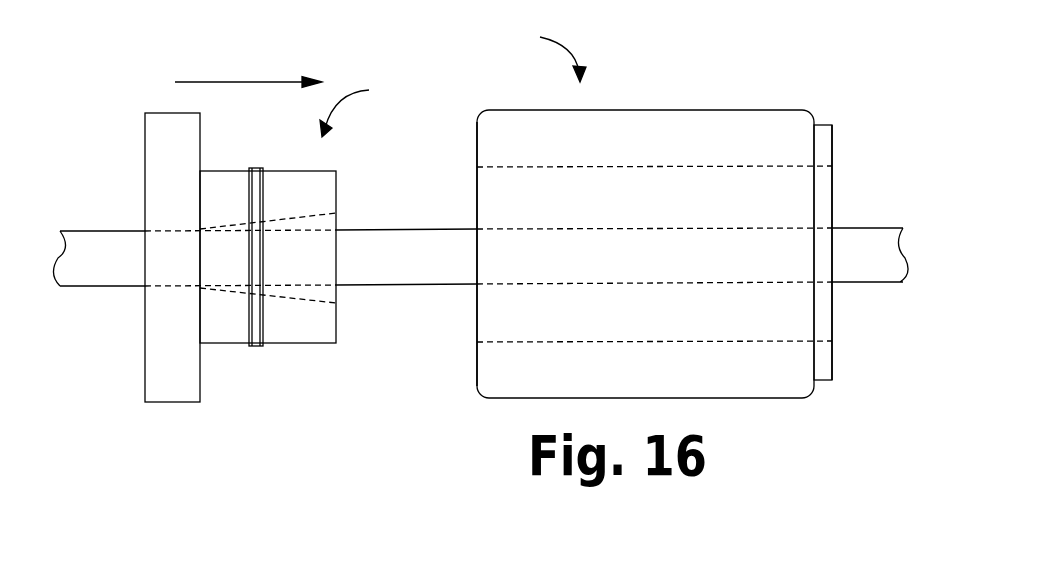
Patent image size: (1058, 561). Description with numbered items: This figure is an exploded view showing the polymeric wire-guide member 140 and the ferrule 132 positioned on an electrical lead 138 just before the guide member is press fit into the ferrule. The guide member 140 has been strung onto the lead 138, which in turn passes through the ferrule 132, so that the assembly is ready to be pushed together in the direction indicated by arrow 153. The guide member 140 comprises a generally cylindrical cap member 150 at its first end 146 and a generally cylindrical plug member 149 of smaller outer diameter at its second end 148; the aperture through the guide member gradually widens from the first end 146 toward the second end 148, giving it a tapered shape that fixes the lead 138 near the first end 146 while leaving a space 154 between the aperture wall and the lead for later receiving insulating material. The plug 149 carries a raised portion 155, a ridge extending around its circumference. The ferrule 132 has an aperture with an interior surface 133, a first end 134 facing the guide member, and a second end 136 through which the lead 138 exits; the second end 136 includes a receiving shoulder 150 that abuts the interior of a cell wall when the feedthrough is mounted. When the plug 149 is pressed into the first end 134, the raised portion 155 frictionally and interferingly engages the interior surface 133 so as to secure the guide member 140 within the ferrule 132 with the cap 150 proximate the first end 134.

The ferrule 132 is at (654, 214).
The interior surface 133 is at (737, 166).
The first end 134 is at (475, 220).
The second end 136 is at (833, 215).
The electrical lead 138 is at (860, 273).
The polymeric wire-guide member 140 is at (361, 109).
The first end 146 is at (147, 220).
The second end 148 is at (337, 199).
The plug member 149 is at (302, 185).
The cap member 150 is at (157, 111).
The arrow 153 is at (250, 82).
The space 154 is at (318, 290).
The raised portion 155 is at (253, 345).